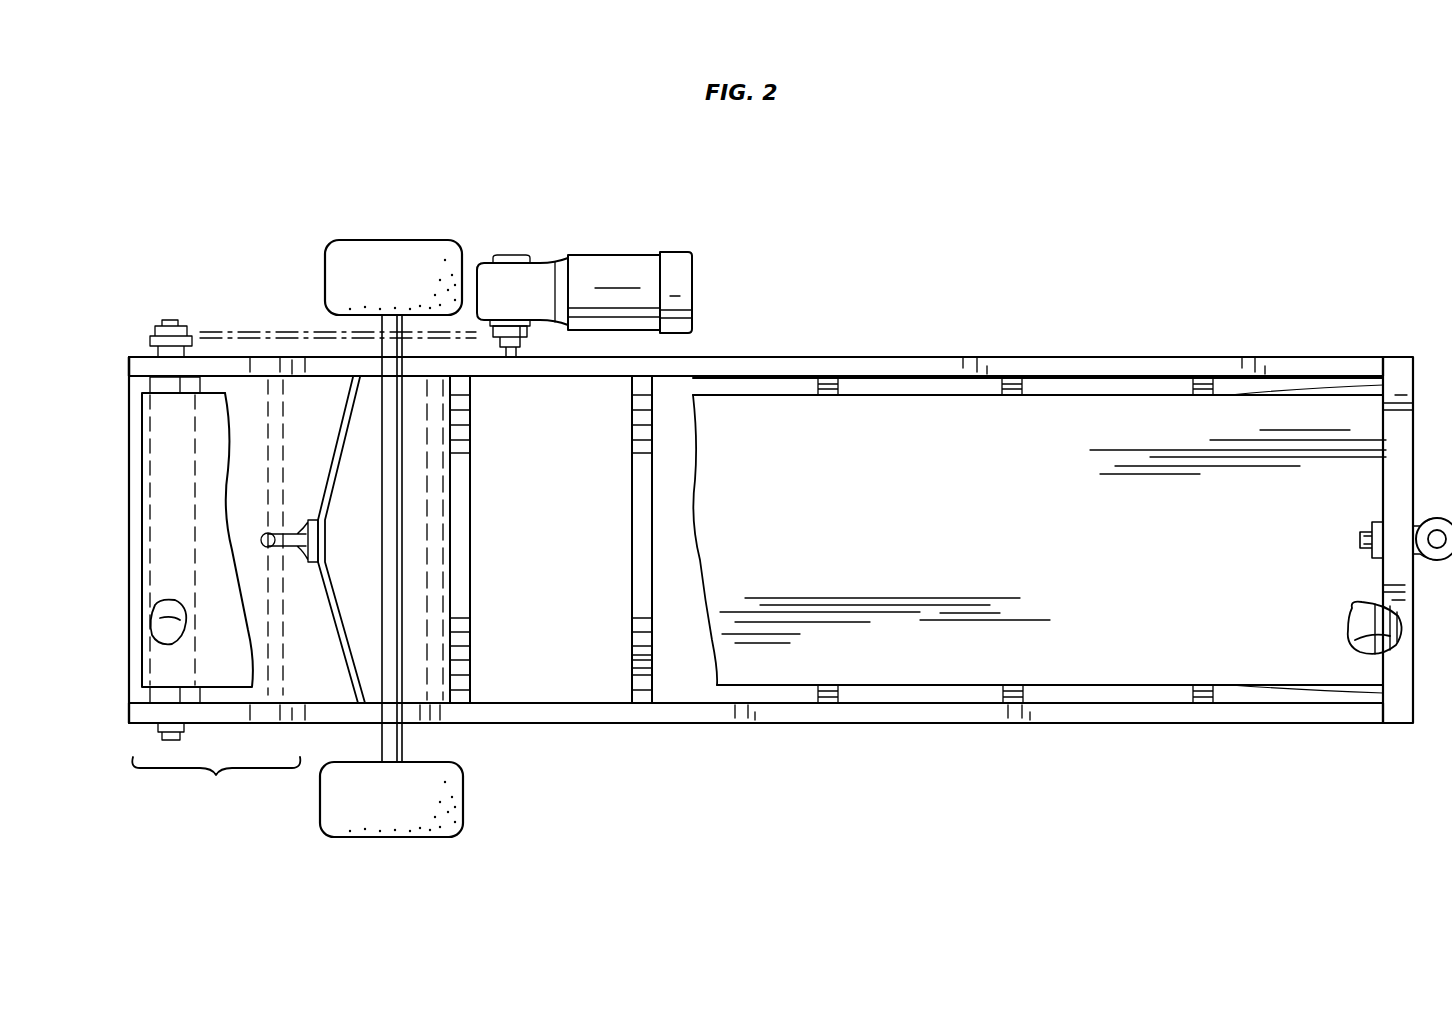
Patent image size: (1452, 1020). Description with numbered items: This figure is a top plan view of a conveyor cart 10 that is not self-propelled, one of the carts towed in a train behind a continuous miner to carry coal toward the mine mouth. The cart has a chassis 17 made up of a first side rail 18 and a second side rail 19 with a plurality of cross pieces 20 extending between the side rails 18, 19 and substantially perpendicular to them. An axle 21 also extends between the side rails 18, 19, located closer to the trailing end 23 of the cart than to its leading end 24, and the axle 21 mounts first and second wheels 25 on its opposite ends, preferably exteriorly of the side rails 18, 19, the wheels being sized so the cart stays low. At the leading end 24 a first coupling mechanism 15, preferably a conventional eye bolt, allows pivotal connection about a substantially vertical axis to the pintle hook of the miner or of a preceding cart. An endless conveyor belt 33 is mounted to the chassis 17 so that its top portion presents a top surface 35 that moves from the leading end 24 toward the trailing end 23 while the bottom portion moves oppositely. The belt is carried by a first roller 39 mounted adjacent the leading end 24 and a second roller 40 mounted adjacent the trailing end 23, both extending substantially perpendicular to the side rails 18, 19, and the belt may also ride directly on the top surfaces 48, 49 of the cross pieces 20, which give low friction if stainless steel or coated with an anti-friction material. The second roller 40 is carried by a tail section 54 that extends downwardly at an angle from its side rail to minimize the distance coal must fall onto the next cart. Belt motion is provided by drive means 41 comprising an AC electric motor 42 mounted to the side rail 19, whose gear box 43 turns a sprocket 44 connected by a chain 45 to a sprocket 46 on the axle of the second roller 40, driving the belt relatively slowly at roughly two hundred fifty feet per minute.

The conveyor cart 10 is at (1001, 233).
The first coupling mechanism 15 is at (1437, 583).
The chassis 17 is at (614, 670).
The first side rail 18 is at (964, 725).
The second side rail 19 is at (835, 357).
The cross pieces 20 is at (632, 525).
The axle 21 is at (385, 512).
The trailing end 23 is at (136, 745).
The leading end 24 is at (1400, 727).
The wheels 25 is at (397, 243).
The endless conveyor belt 33 is at (792, 664).
The top surface 35 is at (1065, 665).
The first roller 39 is at (1352, 632).
The second roller 40 is at (170, 605).
The drive means 41 is at (307, 275).
The AC electric motor 42 is at (622, 256).
The gear box 43 is at (542, 308).
The sprocket 44 is at (520, 345).
The chain 45 is at (283, 332).
The sprocket 46 is at (170, 320).
The top surface of cross piece 48 is at (632, 582).
The top surface of cross piece 49 is at (652, 668).
The tail section 54 is at (216, 781).